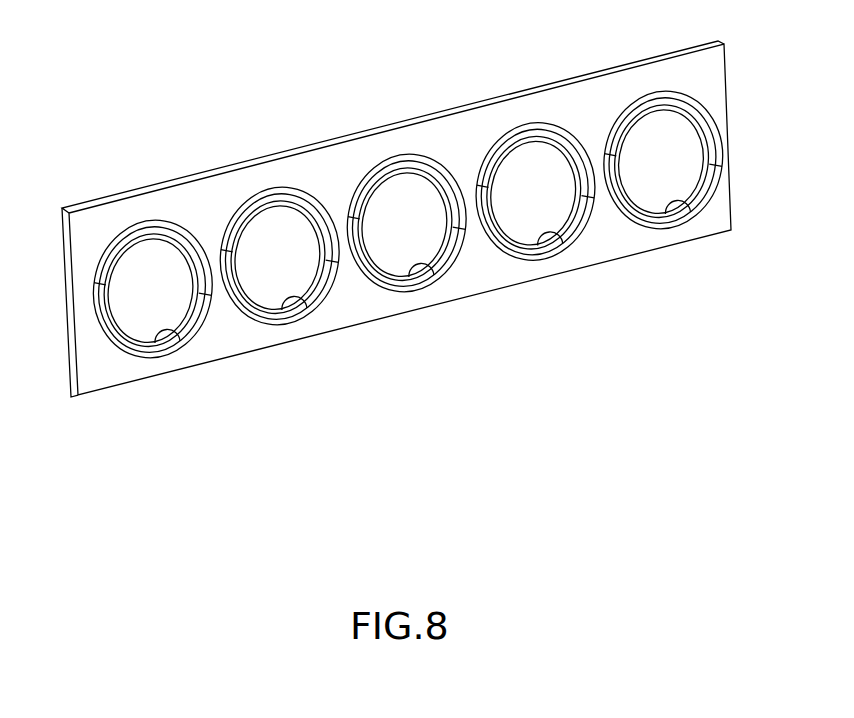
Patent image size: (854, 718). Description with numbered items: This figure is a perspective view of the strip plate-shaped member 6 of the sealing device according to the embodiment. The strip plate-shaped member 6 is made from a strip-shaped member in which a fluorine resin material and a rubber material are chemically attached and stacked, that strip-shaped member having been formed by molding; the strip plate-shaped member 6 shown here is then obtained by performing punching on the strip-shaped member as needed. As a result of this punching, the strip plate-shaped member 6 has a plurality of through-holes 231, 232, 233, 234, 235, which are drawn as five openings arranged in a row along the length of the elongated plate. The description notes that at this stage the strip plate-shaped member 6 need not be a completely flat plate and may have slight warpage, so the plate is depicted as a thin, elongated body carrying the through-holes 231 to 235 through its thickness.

The strip plate-shaped member 6 is at (380, 98).
The through-hole 231 is at (685, 205).
The through-hole 232 is at (557, 240).
The through-hole 233 is at (430, 320).
The through-hole 234 is at (302, 305).
The through-hole 235 is at (180, 338).